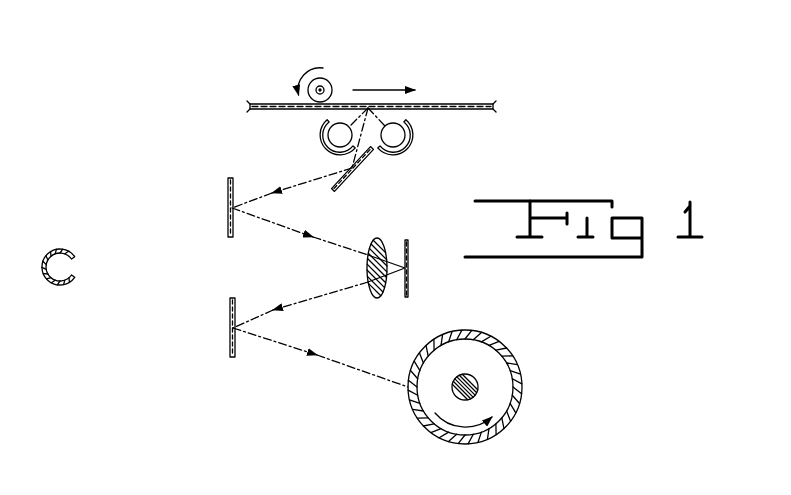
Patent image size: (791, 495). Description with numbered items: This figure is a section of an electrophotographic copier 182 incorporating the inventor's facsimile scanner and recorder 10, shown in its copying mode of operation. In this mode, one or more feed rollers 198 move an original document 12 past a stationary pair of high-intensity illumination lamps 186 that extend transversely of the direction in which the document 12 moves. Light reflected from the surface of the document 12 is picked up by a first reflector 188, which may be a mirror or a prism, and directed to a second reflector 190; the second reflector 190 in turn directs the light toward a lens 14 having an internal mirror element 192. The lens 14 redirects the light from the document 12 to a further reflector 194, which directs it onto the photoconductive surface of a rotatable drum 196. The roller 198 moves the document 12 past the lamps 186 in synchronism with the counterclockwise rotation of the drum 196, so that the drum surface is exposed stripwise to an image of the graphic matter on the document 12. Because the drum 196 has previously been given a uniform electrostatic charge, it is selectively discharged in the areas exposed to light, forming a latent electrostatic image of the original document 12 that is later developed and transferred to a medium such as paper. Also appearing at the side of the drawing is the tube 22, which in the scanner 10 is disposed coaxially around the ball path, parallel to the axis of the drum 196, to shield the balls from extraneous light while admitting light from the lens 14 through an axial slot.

The facsimile scanner and recorder 10 is at (58, 238).
The original document 12 is at (465, 104).
The lens 14 is at (368, 302).
The tube 22 is at (63, 285).
The electrophotographic copier 182 is at (432, 205).
The high-intensity illumination lamps 186 is at (324, 120).
The first reflector 188 is at (333, 190).
The second reflector 190 is at (228, 182).
The internal mirror element 192 is at (408, 290).
The reflector 194 is at (230, 351).
The rotatable drum 196 is at (522, 375).
The feed roller 198 is at (327, 80).